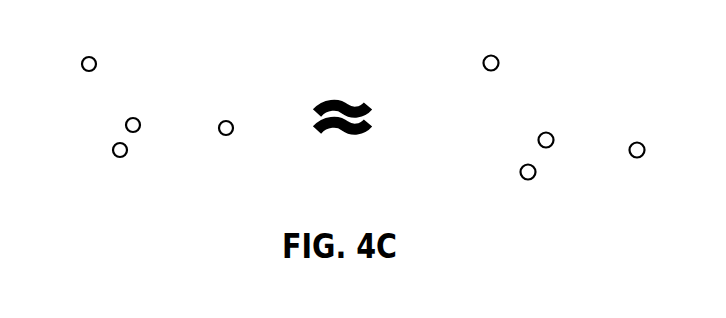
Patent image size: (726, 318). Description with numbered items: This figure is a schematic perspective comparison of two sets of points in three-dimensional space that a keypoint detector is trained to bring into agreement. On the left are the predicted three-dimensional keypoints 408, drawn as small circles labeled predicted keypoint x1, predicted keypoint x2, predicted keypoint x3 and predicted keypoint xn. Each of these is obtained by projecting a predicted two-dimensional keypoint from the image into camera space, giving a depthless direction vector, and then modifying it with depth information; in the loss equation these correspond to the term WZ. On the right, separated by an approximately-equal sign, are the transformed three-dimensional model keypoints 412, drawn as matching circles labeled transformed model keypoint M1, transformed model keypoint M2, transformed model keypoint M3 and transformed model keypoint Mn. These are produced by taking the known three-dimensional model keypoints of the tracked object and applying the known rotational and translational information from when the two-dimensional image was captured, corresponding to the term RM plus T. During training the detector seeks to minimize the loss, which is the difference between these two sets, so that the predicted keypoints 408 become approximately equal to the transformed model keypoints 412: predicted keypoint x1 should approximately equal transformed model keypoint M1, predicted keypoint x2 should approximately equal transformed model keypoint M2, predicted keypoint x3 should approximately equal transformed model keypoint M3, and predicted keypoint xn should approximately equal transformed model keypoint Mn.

The predicted 3D keypoints 408 is at (178, 107).
The transformed 3D model keypoints 412 is at (561, 120).
The predicted 3D keypoint X1 x1 is at (76, 50).
The predicted 3D keypoint X2 x2 is at (217, 108).
The predicted 3D keypoint X3 x3 is at (133, 106).
The predicted 3D keypoint Xn xn is at (109, 161).
The transformed 3D model keypoint M1 is at (514, 68).
The transformed 3D model keypoint M2 is at (622, 160).
The transformed 3D model keypoint M3 is at (530, 131).
The transformed 3D model keypoint Mn is at (544, 188).